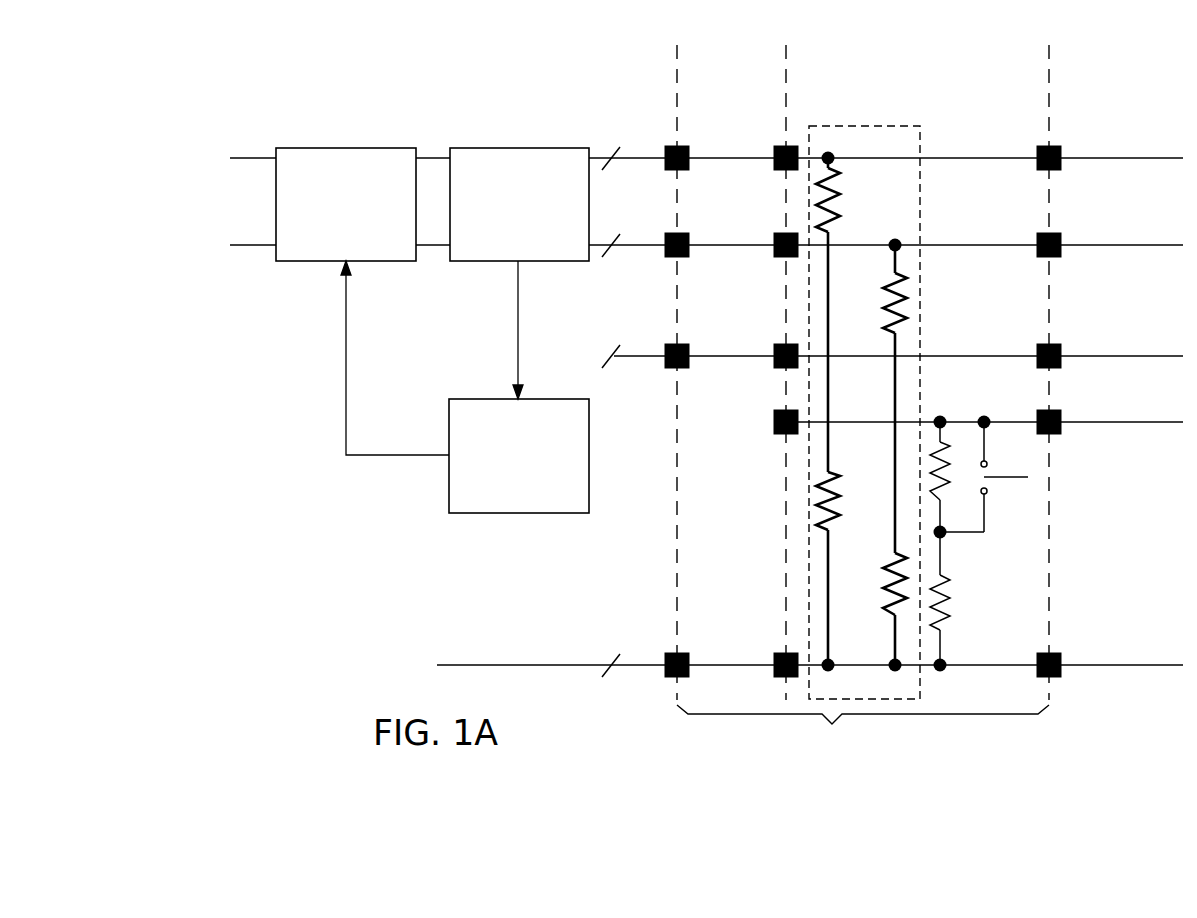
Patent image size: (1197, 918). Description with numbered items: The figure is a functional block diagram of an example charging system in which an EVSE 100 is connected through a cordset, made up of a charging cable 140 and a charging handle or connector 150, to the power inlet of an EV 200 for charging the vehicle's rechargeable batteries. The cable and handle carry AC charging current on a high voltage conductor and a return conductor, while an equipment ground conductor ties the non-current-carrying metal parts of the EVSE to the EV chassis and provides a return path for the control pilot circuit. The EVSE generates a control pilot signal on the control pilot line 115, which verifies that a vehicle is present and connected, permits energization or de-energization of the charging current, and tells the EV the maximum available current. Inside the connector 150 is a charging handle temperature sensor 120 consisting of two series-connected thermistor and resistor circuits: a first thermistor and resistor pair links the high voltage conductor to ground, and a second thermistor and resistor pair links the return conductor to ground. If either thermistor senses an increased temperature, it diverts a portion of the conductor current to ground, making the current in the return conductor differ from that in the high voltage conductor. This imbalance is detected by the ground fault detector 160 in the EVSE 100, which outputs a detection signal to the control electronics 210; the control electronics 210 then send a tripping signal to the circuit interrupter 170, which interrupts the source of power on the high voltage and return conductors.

The EVSE 100 is at (622, 78).
The control pilot line 115 is at (731, 356).
The charging handle temperature sensor 120 is at (921, 196).
The charging cable 140 is at (733, 78).
The charging handle 150 is at (883, 374).
The ground fault detector 160 is at (518, 148).
The circuit interrupter 170 is at (293, 263).
The EV 200 is at (1123, 351).
The control electronics 210 is at (518, 515).